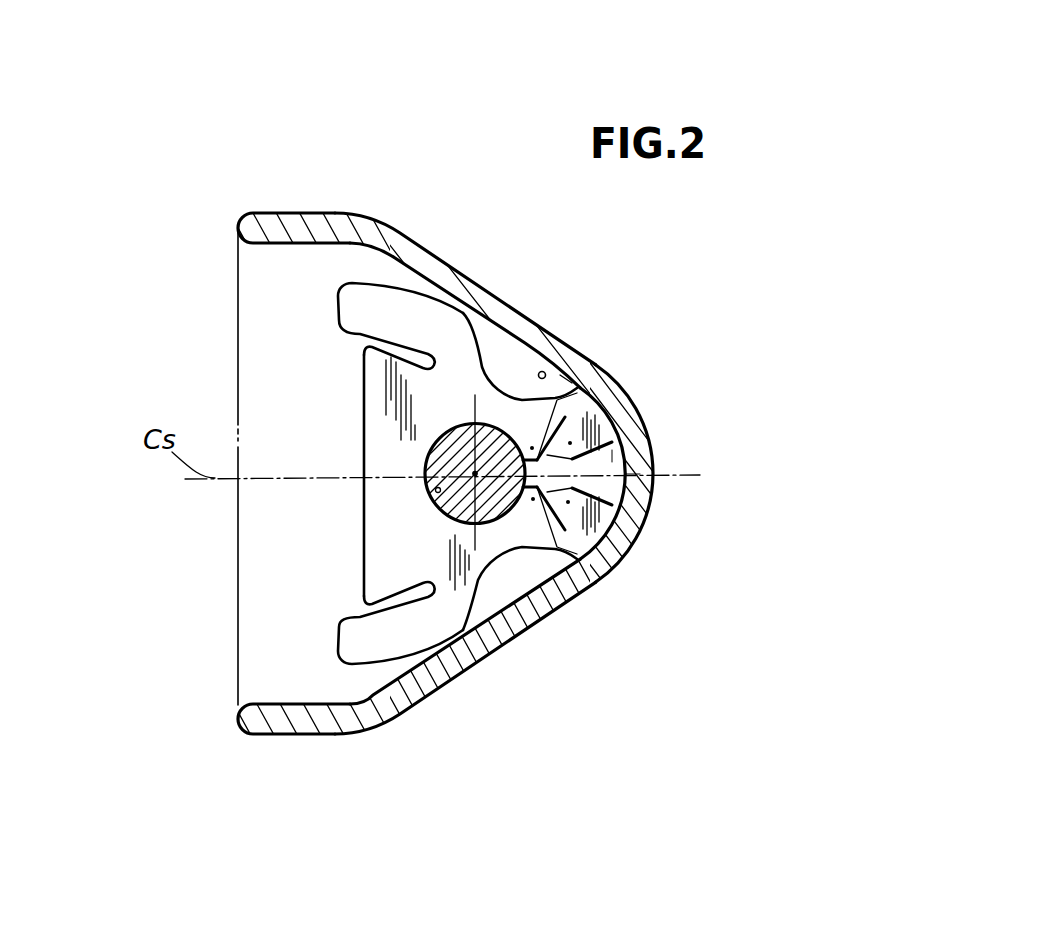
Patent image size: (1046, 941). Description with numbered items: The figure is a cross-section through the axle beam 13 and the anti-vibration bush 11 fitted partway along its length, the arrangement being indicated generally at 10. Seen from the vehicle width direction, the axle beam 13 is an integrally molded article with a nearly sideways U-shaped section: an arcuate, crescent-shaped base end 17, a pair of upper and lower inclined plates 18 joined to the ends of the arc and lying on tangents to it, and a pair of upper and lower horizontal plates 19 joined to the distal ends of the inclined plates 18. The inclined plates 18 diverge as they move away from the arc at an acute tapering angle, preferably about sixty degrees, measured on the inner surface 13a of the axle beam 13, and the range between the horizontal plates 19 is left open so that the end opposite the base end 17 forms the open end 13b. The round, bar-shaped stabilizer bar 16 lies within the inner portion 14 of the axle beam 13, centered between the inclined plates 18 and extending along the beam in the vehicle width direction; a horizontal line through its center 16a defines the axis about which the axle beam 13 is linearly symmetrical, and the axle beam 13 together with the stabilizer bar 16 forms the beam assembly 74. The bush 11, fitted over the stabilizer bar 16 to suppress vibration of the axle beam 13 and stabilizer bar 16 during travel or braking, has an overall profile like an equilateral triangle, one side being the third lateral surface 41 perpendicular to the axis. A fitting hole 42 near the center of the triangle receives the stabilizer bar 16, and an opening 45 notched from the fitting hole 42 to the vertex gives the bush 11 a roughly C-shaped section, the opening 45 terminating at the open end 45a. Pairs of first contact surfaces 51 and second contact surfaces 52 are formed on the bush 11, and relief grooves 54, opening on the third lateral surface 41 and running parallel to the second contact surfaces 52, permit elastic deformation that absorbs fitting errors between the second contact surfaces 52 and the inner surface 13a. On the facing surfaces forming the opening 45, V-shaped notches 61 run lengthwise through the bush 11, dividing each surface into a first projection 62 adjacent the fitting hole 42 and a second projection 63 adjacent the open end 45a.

The clip assembly 10 is at (305, 118).
The anti-vibration bush 11 is at (362, 418).
The axle beam 13 is at (511, 658).
The inner surface of the axle beam 13a is at (566, 382).
The open end of the axle beam 13b is at (237, 650).
The inner portion of the axle beam 14 is at (302, 681).
The stabilizer bar 16 is at (500, 495).
The center of the stabilizer bar 16a is at (473, 473).
The base end 17 is at (640, 408).
The inclined plates 18 is at (485, 302).
The horizontal plates 19 is at (316, 212).
The third lateral surface 41 is at (364, 566).
The fitting hole 42 is at (437, 490).
The opening 45 is at (634, 470).
The open end of the opening 45a is at (614, 456).
The first contact surfaces 51 is at (622, 420).
The second contact surfaces 52 is at (400, 290).
The relief grooves 54 is at (363, 343).
The notches 61 is at (632, 490).
The first projection 62 is at (532, 448).
The second projection 63 is at (570, 443).
The beam assembly 74 is at (611, 669).